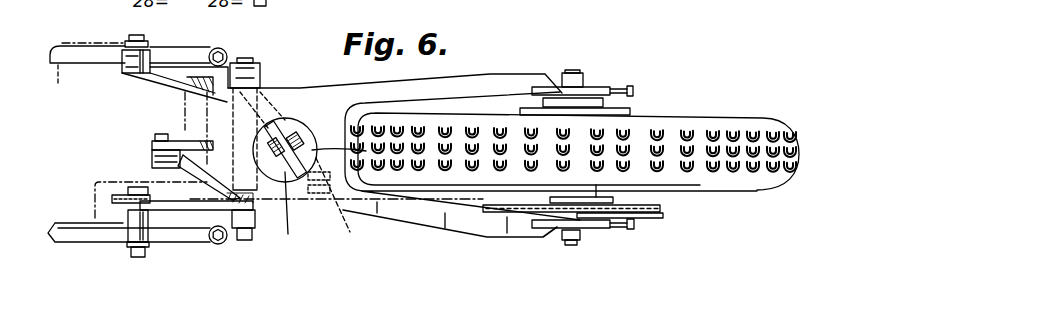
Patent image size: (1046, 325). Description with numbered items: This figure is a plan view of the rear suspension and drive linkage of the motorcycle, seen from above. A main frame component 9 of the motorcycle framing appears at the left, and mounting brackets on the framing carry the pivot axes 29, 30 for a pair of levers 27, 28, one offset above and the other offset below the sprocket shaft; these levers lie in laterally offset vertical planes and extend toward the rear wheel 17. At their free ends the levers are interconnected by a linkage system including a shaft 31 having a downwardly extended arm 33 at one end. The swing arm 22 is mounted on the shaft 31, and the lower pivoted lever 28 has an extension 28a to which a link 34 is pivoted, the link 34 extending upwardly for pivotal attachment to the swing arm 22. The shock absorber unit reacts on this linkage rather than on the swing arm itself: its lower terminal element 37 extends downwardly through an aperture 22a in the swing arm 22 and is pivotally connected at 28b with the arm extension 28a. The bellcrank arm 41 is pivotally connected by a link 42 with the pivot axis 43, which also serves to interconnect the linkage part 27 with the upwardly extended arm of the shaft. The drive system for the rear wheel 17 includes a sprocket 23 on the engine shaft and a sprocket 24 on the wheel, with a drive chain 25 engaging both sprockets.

The main frame component 9 is at (78, 52).
The rear wheel 17 is at (694, 118).
The swing arm 22 is at (488, 78).
The aperture in the swing arm 22a is at (332, 113).
The sprocket 23 is at (118, 196).
The sprocket 24 is at (655, 217).
The drive chain 25 is at (407, 213).
The lever 27 is at (190, 211).
The lever 28 is at (190, 75).
The extension of the lower pivoted arm 28a is at (277, 120).
The pivotal connection 28b is at (312, 253).
The pivot axis 29 is at (134, 255).
The pivot axis 30 is at (140, 37).
The shaft 31 is at (240, 58).
The downwardly extended arm 33 is at (259, 86).
The link 34 is at (343, 204).
The lower terminal element 37 is at (351, 150).
The bellcrank arm 41 is at (174, 138).
The link 42 is at (150, 173).
The pivot axis 43 is at (242, 241).